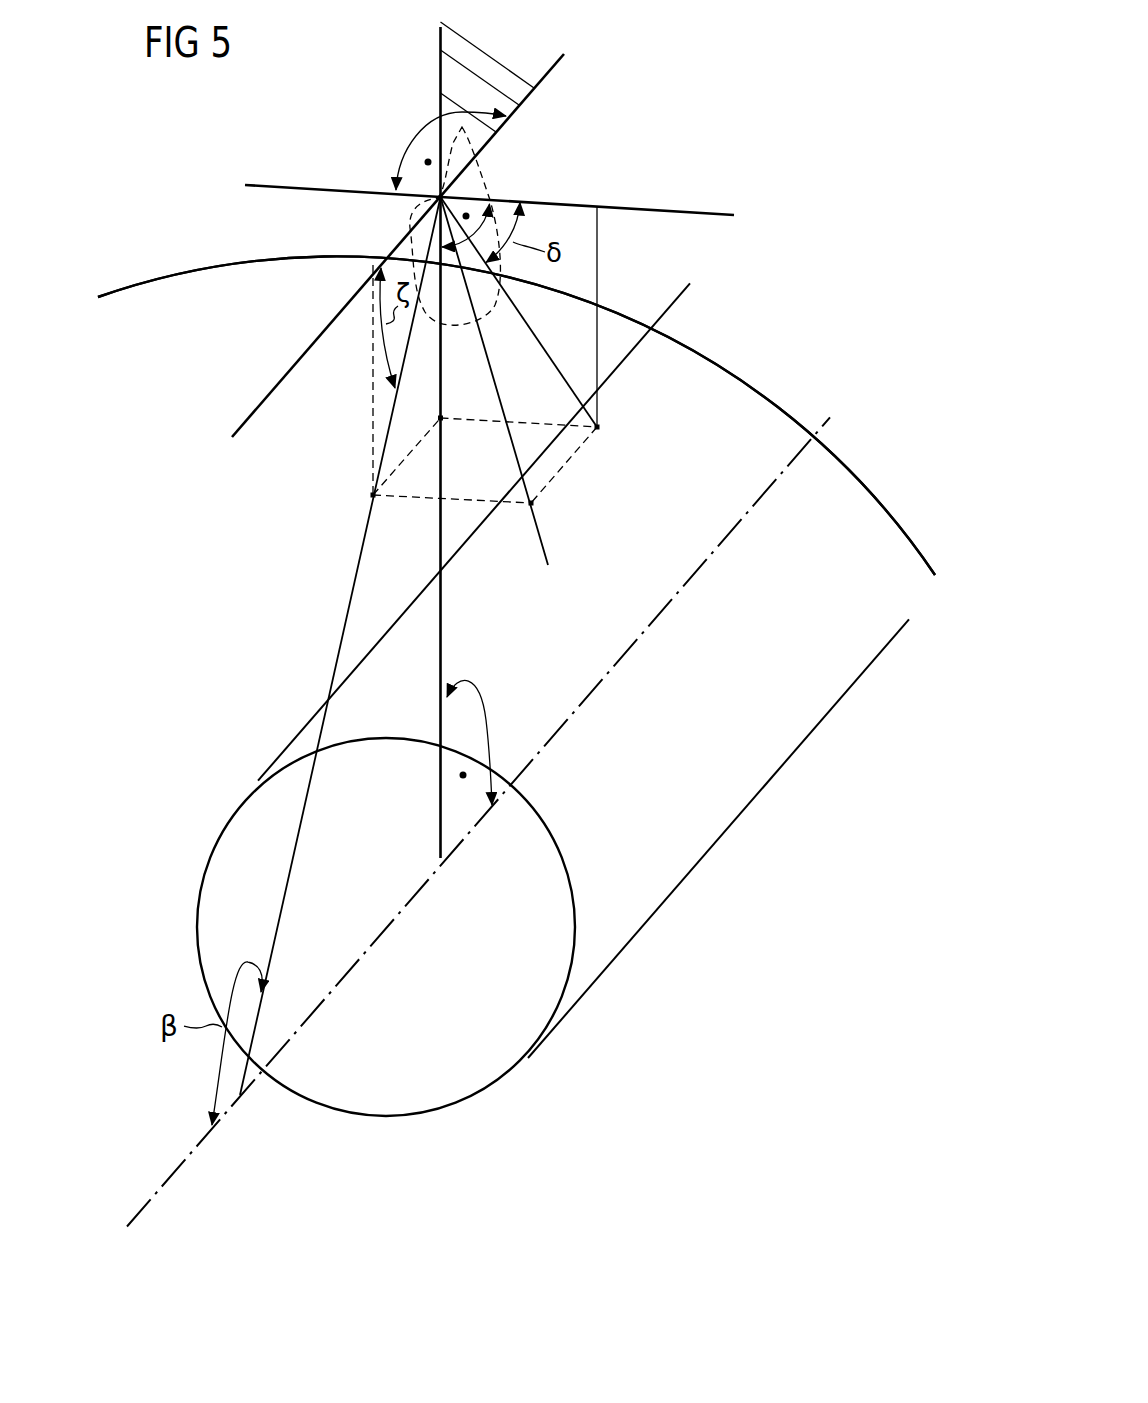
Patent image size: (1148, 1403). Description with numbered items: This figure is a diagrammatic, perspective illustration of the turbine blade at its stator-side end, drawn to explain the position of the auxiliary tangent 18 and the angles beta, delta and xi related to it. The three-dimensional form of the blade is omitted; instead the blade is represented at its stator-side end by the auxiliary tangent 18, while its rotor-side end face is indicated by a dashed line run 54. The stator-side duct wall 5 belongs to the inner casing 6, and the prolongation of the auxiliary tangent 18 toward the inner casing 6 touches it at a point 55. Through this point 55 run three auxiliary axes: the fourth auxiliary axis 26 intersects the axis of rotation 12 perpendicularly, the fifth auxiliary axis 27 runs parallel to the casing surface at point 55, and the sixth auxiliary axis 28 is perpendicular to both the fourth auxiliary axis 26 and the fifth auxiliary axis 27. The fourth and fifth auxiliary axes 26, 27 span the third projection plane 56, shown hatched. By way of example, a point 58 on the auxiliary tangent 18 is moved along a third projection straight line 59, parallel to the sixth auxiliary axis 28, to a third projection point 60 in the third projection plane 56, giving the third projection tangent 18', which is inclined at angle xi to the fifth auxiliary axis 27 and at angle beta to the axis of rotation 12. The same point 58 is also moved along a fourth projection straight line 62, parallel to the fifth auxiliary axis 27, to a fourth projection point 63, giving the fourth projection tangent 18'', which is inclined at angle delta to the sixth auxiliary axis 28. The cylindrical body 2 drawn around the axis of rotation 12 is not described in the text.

The cylindrical object 2 is at (216, 870).
The stator-side duct wall 5 is at (184, 272).
The inner casing 6 is at (206, 266).
The axis of rotation 12 is at (626, 654).
The auxiliary tangent 18 is at (526, 381).
The third projection tangent 18' is at (340, 646).
The fourth projection tangent 18'' is at (519, 312).
The fourth auxiliary axis 26 is at (440, 68).
The fifth auxiliary axis 27 is at (542, 73).
The sixth auxiliary axis 28 is at (667, 208).
The dashed line run 54 is at (473, 174).
The point 55 is at (432, 202).
The third projection plane 56 is at (480, 52).
The point 58 is at (528, 506).
The third projection straight line 59 is at (426, 502).
The third projection point 60 is at (370, 496).
The fourth projection straight line 62 is at (568, 466).
The fourth projection point 63 is at (602, 427).